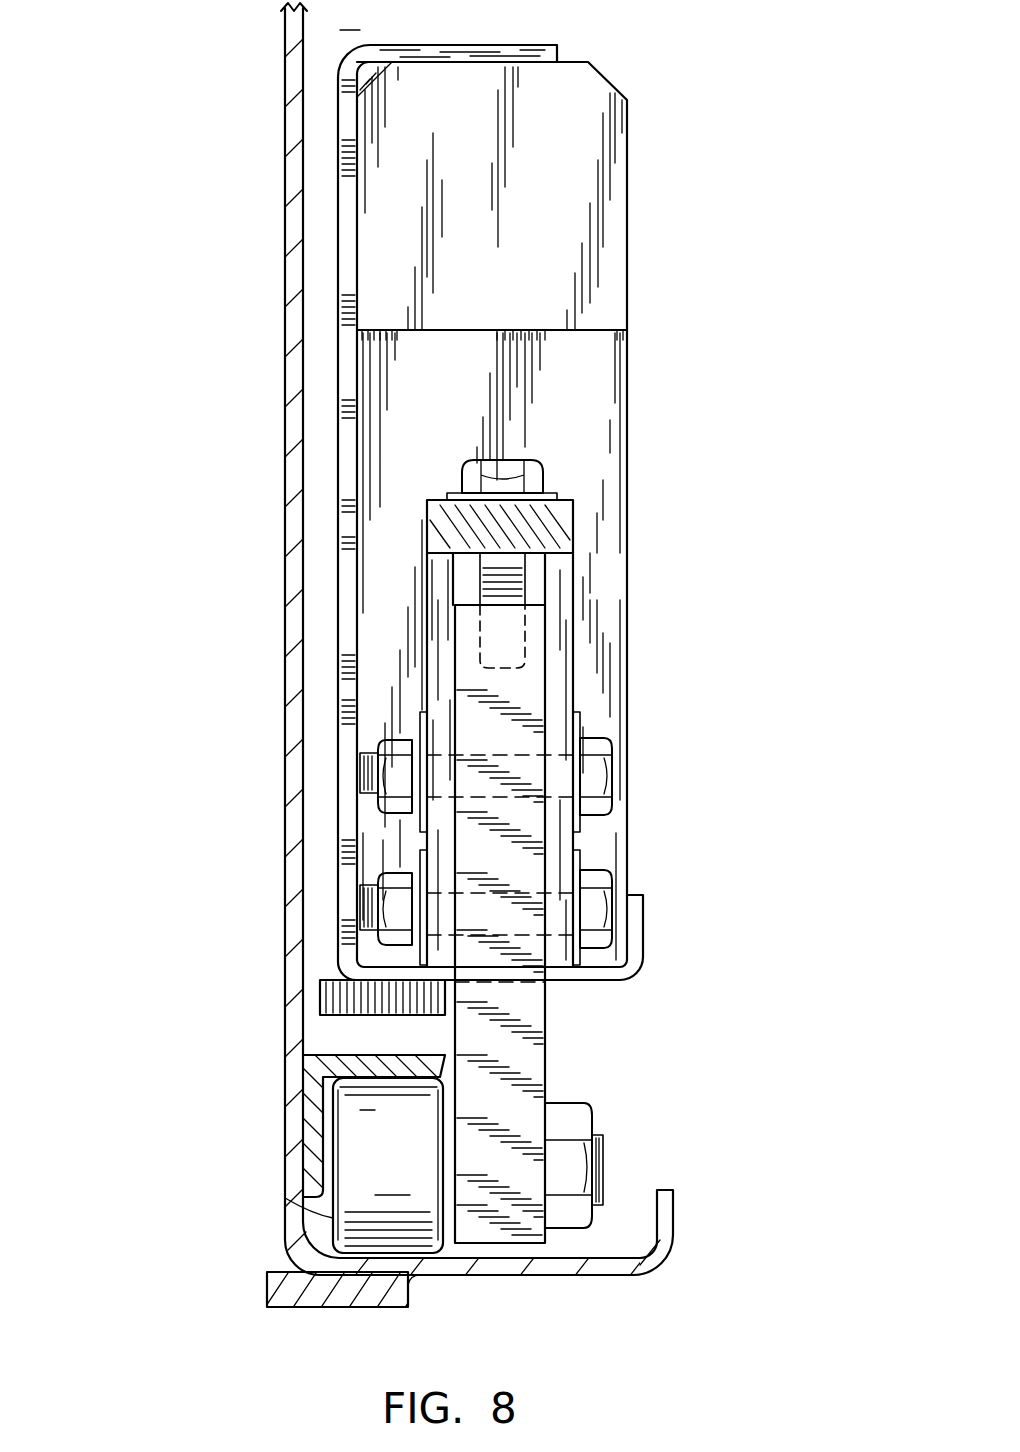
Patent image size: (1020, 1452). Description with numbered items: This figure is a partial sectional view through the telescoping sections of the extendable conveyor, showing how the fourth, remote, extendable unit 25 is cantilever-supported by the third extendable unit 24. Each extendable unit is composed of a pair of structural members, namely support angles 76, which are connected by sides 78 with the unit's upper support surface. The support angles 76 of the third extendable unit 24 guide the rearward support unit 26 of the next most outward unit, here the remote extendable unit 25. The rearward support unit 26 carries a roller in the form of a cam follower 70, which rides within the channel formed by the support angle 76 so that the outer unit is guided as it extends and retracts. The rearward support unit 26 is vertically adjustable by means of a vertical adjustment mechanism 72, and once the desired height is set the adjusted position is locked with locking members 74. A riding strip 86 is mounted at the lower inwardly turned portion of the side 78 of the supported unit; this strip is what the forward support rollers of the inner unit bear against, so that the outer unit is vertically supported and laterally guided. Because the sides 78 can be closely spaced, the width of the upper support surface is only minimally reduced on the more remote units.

The third extendable unit 24 is at (279, 1229).
The fourth, remote, extendable unit 25 is at (646, 959).
The rearward support member 26 is at (542, 1037).
The cam follower 70 is at (335, 1218).
The vertical adjustment mechanism 72 is at (520, 580).
The locking member 74 is at (612, 778).
The support angle 76 is at (358, 1056).
The side 78 is at (342, 586).
The riding strip 86 is at (320, 1000).